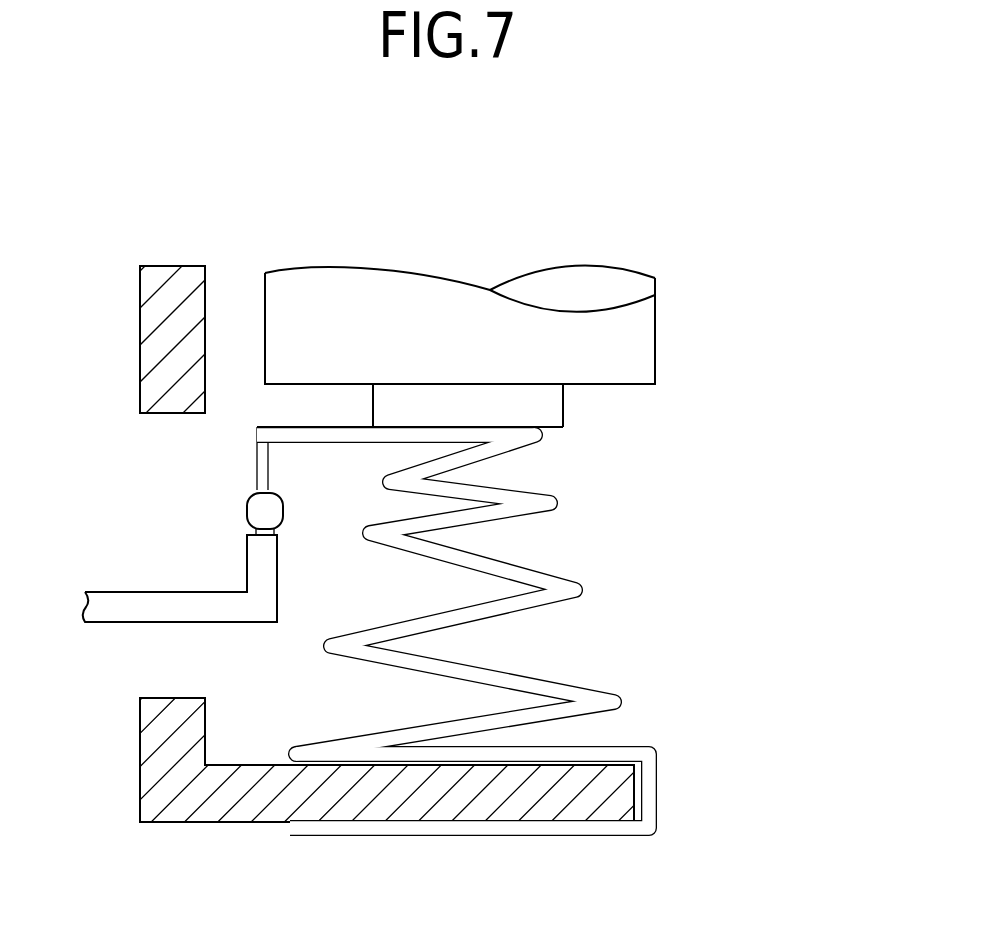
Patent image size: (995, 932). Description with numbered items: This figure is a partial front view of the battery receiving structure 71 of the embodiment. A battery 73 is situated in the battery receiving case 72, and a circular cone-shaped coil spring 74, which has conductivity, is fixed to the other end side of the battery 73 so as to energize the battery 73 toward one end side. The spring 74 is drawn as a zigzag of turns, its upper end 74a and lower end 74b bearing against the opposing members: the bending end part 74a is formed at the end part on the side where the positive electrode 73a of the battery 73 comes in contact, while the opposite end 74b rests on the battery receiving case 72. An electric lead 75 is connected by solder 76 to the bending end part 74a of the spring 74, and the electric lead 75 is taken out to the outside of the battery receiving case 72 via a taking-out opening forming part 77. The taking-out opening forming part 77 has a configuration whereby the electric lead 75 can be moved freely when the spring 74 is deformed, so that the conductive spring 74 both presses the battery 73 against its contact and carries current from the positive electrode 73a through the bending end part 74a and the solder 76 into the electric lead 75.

The contact unit 71 is at (553, 307).
The battery receiving case 72 is at (140, 757).
The battery 73 is at (655, 332).
The positive electrode 73a is at (565, 402).
The coil spring 74 is at (465, 659).
The bending end part 74a is at (257, 457).
The other end of coil spring 74b is at (657, 750).
The electric lead 75 is at (102, 592).
The solder 76 is at (247, 512).
The taking-out opening forming part 77 is at (150, 412).